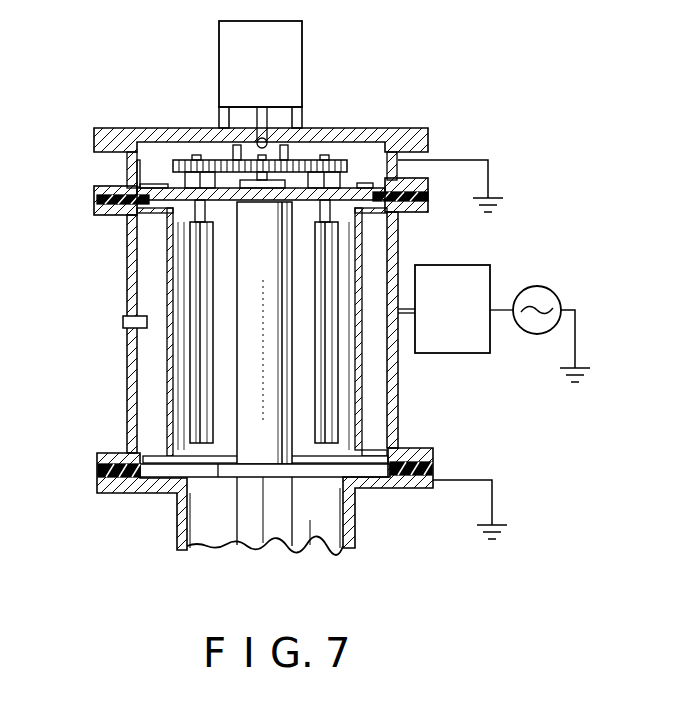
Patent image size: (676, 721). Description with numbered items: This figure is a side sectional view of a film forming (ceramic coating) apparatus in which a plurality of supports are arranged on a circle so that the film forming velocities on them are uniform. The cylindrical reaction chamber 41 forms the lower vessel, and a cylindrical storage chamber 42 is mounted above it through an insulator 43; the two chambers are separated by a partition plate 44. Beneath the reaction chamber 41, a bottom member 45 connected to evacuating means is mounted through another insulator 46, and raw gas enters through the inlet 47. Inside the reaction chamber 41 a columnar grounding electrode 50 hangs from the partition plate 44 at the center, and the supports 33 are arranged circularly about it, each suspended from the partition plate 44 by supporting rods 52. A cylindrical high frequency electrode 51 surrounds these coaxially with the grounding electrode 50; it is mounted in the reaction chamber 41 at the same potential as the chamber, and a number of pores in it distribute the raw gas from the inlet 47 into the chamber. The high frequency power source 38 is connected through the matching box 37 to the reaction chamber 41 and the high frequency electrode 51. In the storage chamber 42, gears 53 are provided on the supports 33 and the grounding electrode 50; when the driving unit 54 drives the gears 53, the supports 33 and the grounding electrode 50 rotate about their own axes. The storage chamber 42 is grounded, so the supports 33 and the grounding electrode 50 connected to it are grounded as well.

The supports 33 is at (195, 282).
The matching box 37 is at (447, 265).
The high frequency power source 38 is at (539, 286).
The reaction chamber 41 is at (127, 245).
The storage chamber 42 is at (130, 163).
The insulator 43 is at (96, 200).
The partition plate 44 is at (352, 190).
The bottom member 45 is at (353, 511).
The insulator 46 is at (97, 473).
The inlet 47 is at (123, 321).
The columnar grounding electrode 50 is at (271, 455).
The cylindrical high frequency electrode 51 is at (167, 394).
The supporting rods 52 is at (317, 208).
The gears 53 is at (212, 158).
The driving unit 54 is at (302, 50).